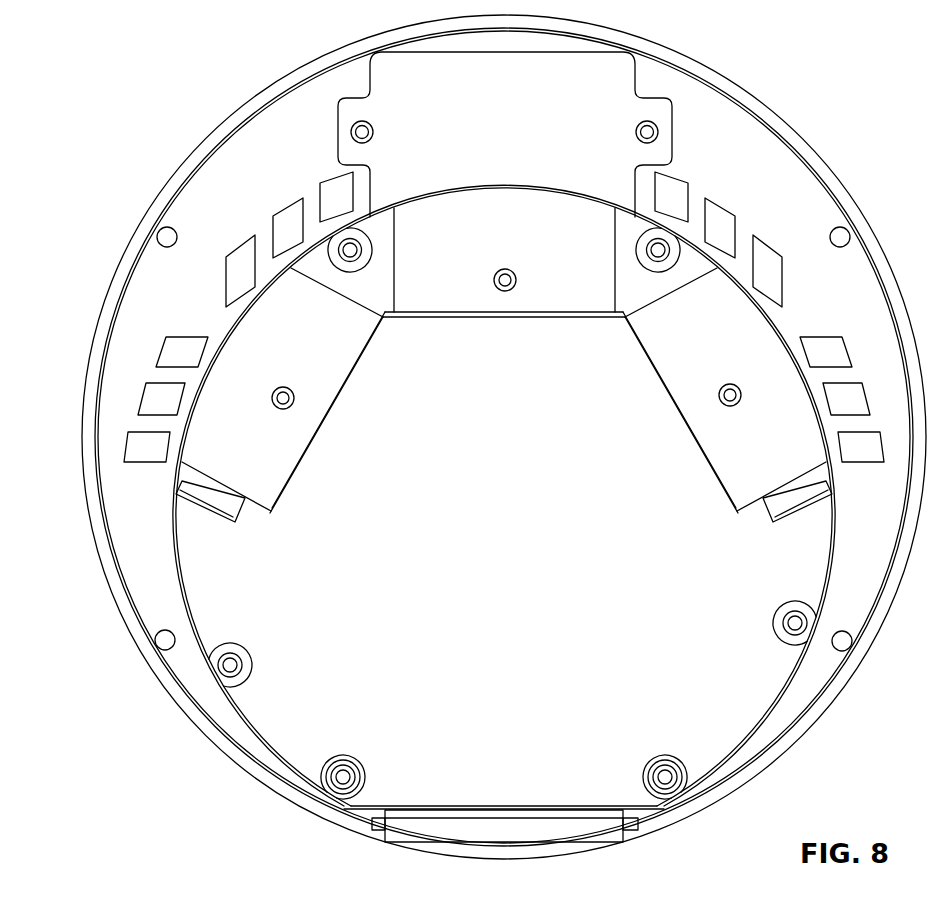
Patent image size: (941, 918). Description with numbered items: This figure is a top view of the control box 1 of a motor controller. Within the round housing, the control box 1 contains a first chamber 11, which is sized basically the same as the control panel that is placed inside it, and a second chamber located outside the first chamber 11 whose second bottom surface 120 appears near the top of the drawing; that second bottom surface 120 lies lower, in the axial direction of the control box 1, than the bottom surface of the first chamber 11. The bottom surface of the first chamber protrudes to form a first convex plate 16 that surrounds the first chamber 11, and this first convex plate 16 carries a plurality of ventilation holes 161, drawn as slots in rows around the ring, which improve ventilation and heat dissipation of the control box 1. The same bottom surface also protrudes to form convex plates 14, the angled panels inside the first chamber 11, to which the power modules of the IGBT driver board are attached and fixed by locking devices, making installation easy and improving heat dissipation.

The control box 1 is at (836, 749).
The first chamber 11 is at (347, 680).
The second bottom surface 120 is at (557, 127).
The convex plates 14 is at (247, 457).
The first convex plate 16 is at (235, 198).
The ventilation holes 161 is at (718, 222).